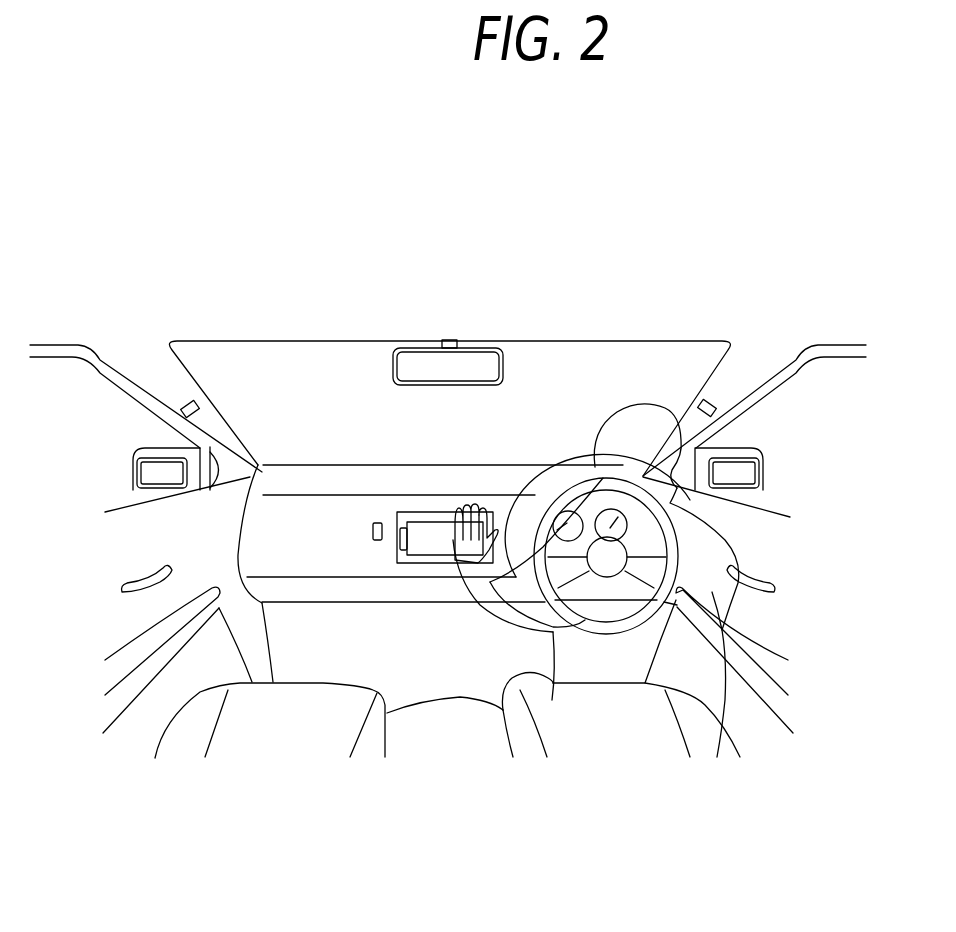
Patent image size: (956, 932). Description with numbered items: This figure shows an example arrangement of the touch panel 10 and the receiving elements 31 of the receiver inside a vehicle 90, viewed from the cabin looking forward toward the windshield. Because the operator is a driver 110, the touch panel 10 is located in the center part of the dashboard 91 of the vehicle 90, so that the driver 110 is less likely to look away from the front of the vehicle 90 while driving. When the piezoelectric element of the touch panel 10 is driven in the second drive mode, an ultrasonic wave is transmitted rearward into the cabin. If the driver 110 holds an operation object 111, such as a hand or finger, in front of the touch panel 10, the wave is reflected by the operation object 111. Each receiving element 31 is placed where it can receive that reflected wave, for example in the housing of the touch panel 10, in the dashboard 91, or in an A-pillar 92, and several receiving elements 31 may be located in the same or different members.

The vehicle 90 is at (587, 303).
The A-pillar 92 is at (170, 392).
The dashboard 91 is at (333, 517).
The driver 110 is at (613, 527).
The touch panel 10 is at (423, 510).
The operation object 111 is at (495, 512).
The receiving element 31 is at (203, 400).